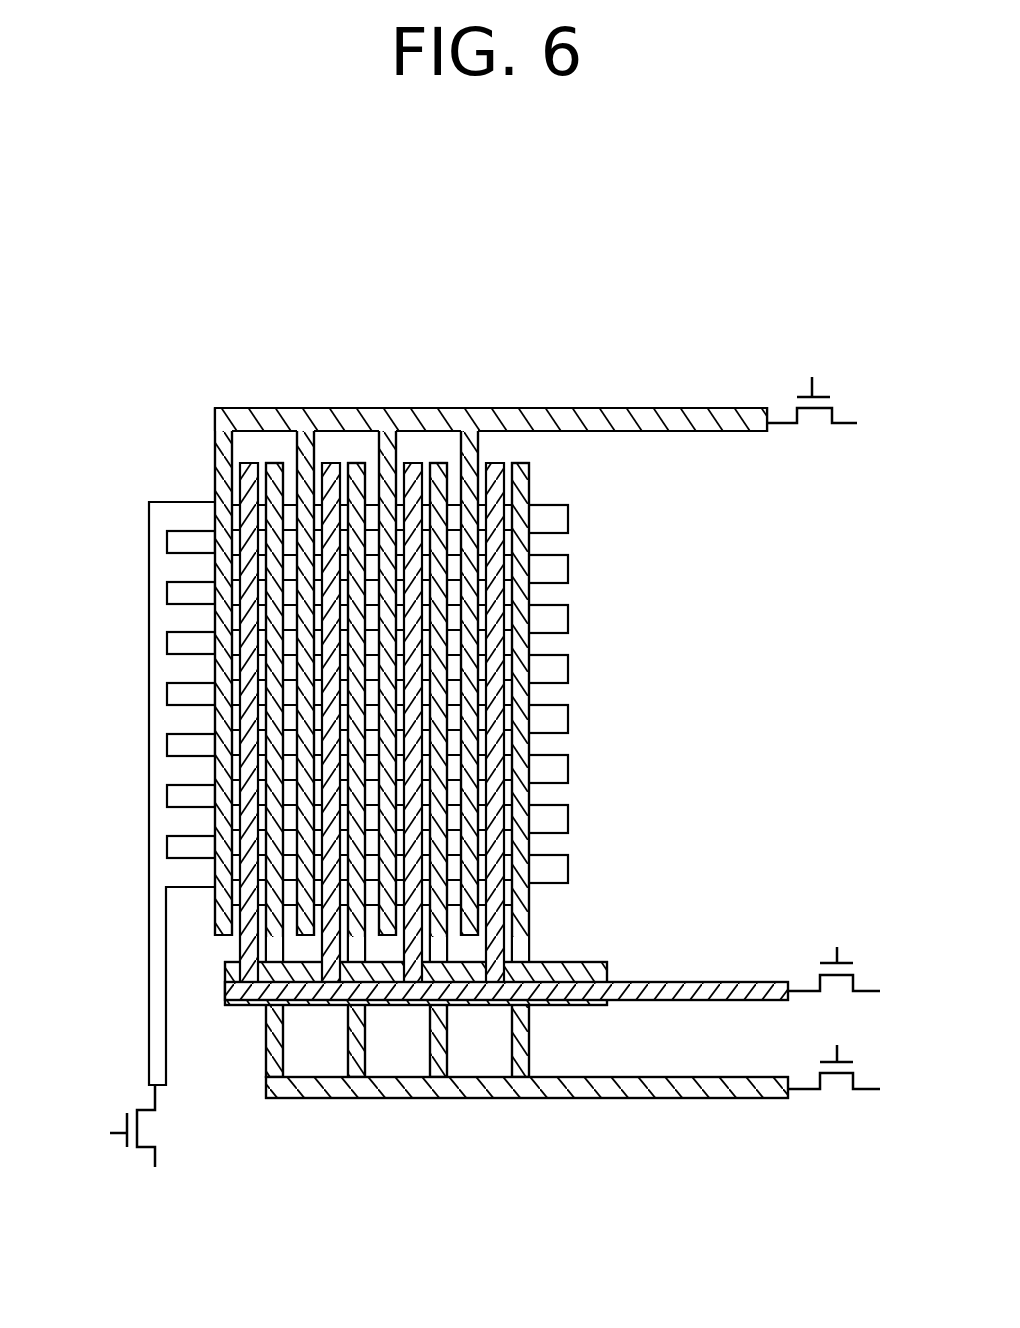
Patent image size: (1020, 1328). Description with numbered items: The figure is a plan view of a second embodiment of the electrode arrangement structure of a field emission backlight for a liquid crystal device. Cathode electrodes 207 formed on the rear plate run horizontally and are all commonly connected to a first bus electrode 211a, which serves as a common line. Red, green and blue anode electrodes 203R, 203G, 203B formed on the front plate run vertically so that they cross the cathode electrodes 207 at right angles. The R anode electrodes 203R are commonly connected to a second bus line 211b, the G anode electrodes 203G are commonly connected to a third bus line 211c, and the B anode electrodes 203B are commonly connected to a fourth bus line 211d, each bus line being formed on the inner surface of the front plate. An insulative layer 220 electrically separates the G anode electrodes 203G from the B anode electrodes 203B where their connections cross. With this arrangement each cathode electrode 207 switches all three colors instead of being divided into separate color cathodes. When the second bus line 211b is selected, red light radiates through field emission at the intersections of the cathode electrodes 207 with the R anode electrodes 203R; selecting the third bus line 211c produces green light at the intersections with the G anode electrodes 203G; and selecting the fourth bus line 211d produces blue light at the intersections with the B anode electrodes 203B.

The R anode electrodes 203R is at (253, 468).
The G anode electrodes 203G is at (495, 468).
The B anode electrodes 203B is at (275, 1038).
The cathode electrodes 207 is at (558, 520).
The first bus electrode 211a is at (149, 1031).
The second bus line 211b is at (667, 420).
The third bus line 211c is at (721, 983).
The fourth bus line 211d is at (718, 1105).
The insulative layer 220 is at (588, 965).